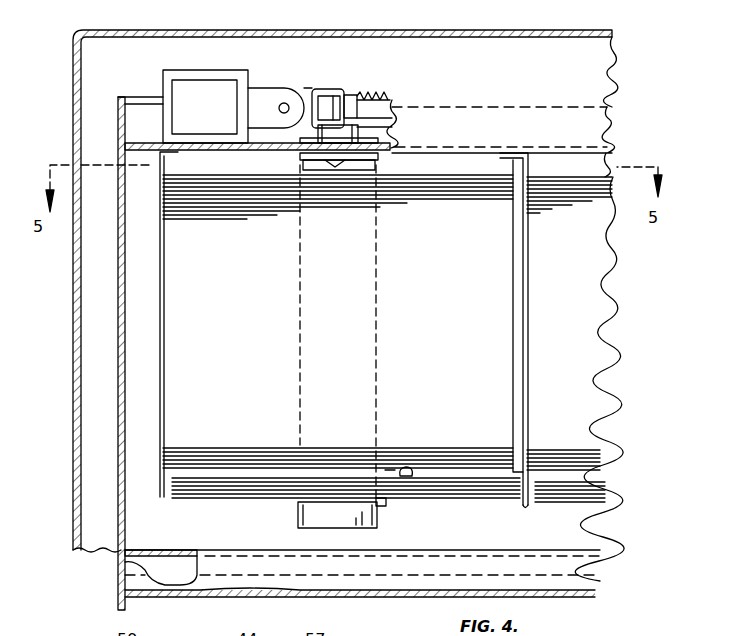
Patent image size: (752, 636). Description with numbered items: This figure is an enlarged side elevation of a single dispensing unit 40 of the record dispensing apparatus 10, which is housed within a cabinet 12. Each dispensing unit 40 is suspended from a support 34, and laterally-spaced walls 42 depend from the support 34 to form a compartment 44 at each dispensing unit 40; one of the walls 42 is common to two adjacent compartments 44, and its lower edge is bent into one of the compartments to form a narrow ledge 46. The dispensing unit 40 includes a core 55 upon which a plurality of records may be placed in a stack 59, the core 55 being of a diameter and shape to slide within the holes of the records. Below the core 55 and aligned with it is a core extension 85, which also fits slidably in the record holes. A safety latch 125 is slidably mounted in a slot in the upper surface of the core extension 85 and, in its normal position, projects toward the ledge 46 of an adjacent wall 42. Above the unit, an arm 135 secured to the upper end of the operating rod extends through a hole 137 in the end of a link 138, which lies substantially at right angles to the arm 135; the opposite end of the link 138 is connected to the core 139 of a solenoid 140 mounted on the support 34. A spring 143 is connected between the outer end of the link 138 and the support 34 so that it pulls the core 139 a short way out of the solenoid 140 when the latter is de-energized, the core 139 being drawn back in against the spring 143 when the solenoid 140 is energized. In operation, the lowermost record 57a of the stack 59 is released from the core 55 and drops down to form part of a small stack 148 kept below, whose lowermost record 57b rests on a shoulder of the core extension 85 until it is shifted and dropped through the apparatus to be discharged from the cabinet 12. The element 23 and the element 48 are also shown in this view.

The record dispensing apparatus 10 is at (616, 325).
The cabinet 12 is at (607, 96).
The inner wall 23 is at (115, 490).
The support 34 is at (600, 136).
The dispensing unit 40 is at (376, 128).
The wall 42 is at (162, 311).
The compartment 44 is at (455, 165).
The ledge 46 is at (525, 507).
The lower conveyor 48 is at (450, 560).
The core 55 is at (312, 160).
The lowermost record 57a is at (410, 468).
The lowermost record 57b is at (428, 504).
The stack 59 is at (162, 187).
The core extension 85 is at (300, 515).
The latch 125 is at (383, 507).
The arm 135 is at (393, 117).
The hole 137 is at (322, 96).
The link 138 is at (310, 92).
The core 139 is at (285, 88).
The solenoid 140 is at (214, 73).
The spring 143 is at (384, 96).
The stack 148 is at (216, 499).